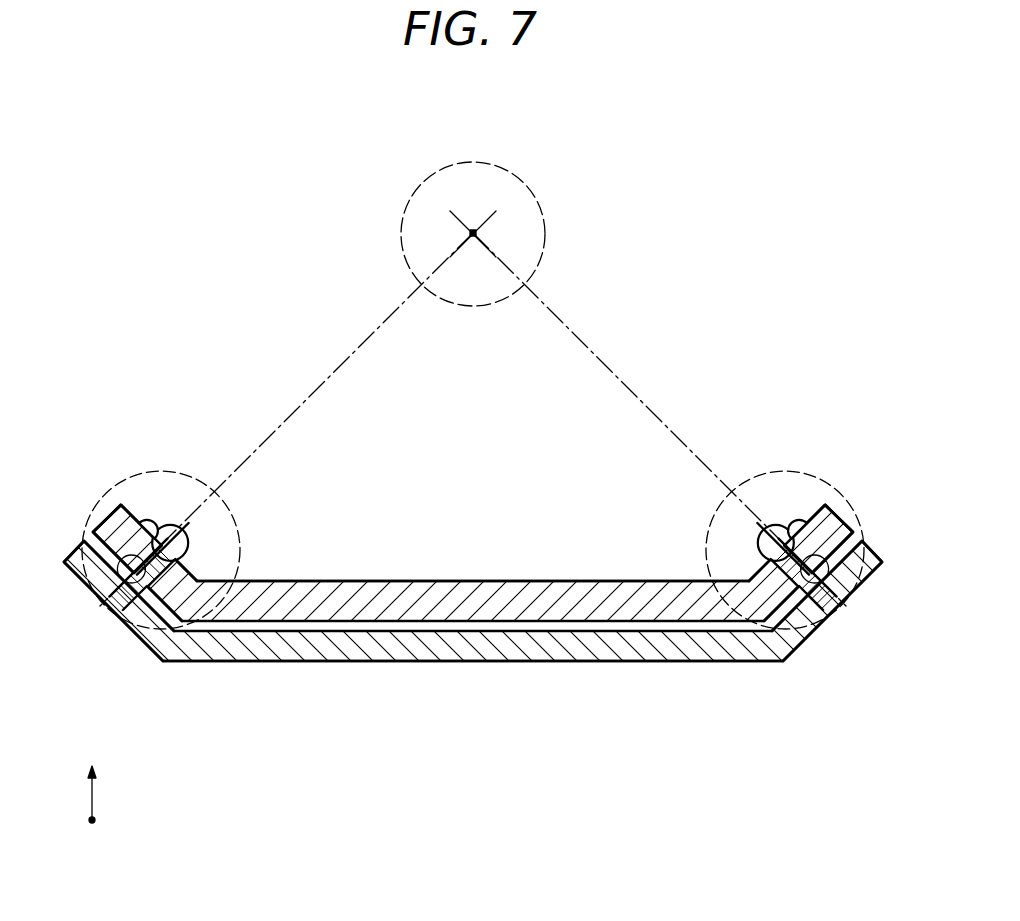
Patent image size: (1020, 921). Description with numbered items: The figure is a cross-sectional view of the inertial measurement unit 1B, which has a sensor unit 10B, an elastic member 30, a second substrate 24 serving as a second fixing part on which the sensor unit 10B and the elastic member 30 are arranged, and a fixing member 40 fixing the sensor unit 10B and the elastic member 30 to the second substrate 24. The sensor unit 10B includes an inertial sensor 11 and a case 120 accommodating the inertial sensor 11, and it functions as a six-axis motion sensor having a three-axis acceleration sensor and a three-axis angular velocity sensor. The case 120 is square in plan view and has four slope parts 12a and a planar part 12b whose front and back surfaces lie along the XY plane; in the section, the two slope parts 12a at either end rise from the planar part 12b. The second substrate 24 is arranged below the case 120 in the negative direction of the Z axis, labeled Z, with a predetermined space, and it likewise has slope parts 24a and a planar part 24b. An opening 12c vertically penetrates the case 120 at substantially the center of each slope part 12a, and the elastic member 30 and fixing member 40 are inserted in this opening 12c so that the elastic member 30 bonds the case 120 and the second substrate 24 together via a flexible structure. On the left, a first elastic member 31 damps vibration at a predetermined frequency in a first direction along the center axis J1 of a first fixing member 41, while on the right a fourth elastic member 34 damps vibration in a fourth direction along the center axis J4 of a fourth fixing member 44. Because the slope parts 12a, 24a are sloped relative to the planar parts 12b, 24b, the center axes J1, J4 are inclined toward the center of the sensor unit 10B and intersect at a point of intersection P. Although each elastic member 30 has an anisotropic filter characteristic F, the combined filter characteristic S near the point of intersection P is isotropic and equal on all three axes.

The inertial measurement unit 1B is at (763, 299).
The sensor unit 10B is at (508, 725).
The inertial sensor 11 is at (611, 606).
The case 120 is at (539, 606).
The slope part 12a is at (110, 522).
The planar part 12b is at (418, 584).
The opening 12c is at (118, 566).
The second substrate 24 is at (416, 656).
The slope part 24a is at (76, 552).
The planar part 24b is at (340, 656).
The elastic member 30 is at (130, 418).
The first elastic member 31 is at (132, 515).
The fixing member 40 is at (185, 417).
The first fixing member 41 is at (175, 515).
The fourth elastic member 34 is at (810, 512).
The fourth fixing member 44 is at (768, 512).
The combined filter characteristic S is at (452, 163).
The point of intersection P is at (478, 236).
The anisotropic filter characteristic F is at (242, 527).
The center axis J1 is at (323, 383).
The center axis J4 is at (623, 383).
The Z-axis Z is at (93, 779).